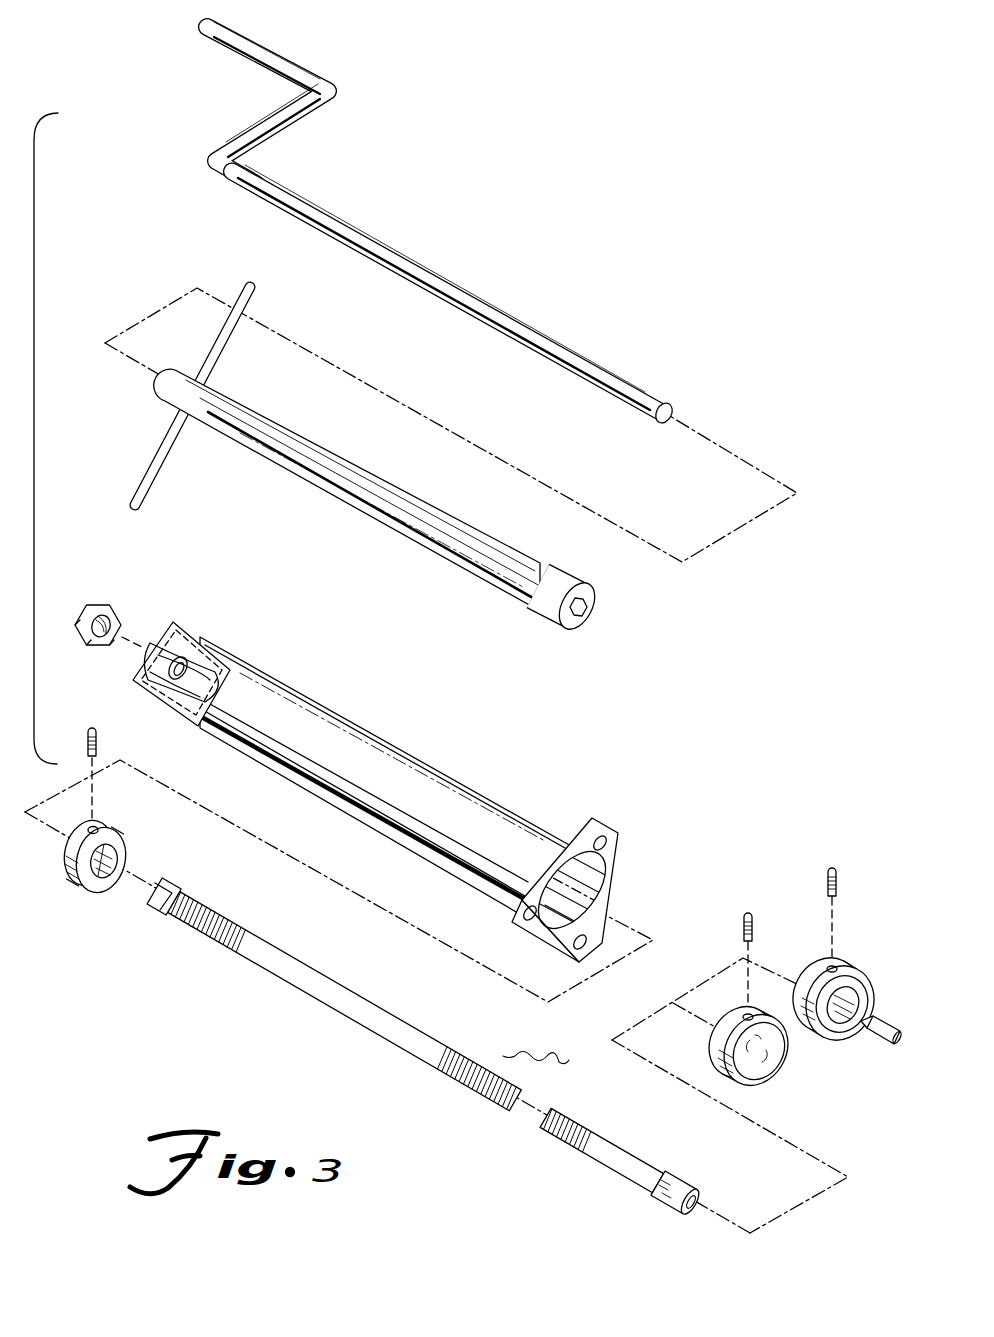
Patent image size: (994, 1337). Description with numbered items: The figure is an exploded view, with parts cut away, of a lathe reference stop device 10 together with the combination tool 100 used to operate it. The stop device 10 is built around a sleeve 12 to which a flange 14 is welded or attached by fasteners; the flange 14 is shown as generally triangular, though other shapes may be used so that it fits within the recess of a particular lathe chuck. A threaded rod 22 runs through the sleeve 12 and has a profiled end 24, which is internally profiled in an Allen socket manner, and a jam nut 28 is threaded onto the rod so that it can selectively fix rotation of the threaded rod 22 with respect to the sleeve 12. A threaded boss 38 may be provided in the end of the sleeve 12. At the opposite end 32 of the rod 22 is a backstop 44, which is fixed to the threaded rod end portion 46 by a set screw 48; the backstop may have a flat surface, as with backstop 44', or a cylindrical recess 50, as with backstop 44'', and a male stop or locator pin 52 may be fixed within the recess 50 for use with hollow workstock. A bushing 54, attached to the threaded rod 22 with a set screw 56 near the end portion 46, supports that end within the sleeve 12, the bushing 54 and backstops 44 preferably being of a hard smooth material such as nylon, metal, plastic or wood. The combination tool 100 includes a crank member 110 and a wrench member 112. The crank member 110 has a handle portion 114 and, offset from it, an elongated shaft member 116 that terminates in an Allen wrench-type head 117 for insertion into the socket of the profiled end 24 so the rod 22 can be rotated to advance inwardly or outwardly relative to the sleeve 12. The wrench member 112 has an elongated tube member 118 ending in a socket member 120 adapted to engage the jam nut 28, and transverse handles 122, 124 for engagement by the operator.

The lathe reference stop device 10 is at (483, 885).
The sleeve 12 is at (477, 795).
The flange 14 is at (608, 866).
The threaded rod 22 is at (358, 978).
The profiled end 24 is at (178, 892).
The jam nut 28 is at (116, 603).
The end of threaded rod 32 is at (684, 1188).
The threaded boss 38 is at (158, 643).
The backstop 44 is at (803, 979).
The flat-surface backstop 44' is at (755, 1057).
The recessed backstop 44'' is at (845, 1001).
The threaded rod end portion 46 is at (643, 1171).
The set screw 48 is at (828, 878).
The cylindrical recess 50 is at (840, 1035).
The locator pin 52 is at (880, 1046).
The bushing 54 is at (90, 886).
The set screw 56 is at (100, 738).
The combination tool 100 is at (437, 328).
The crank member 110 is at (473, 224).
The wrench member 112 is at (406, 461).
The handle portion 114 is at (312, 72).
The elongated shaft member 116 is at (433, 279).
The Allen wrench-type head 117 is at (666, 414).
The elongated tube member 118 is at (437, 523).
The socket member 120 is at (578, 590).
The transverse handle 122 is at (158, 477).
The transverse handle 124 is at (226, 352).